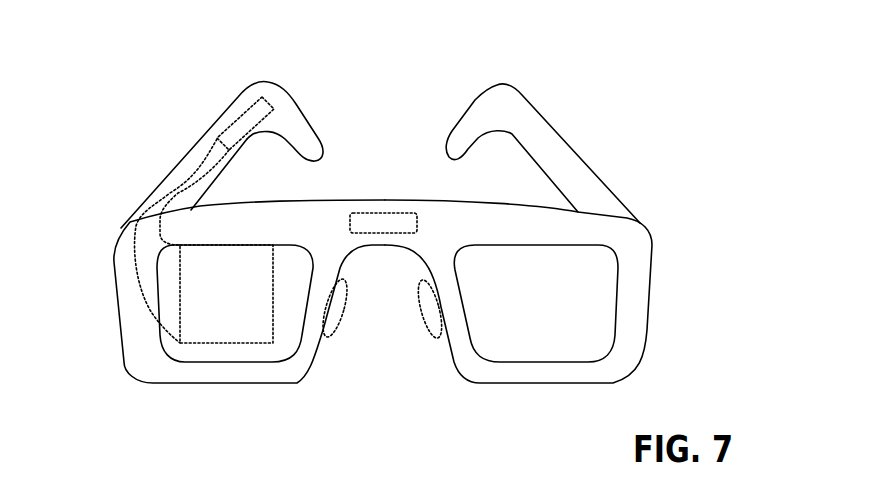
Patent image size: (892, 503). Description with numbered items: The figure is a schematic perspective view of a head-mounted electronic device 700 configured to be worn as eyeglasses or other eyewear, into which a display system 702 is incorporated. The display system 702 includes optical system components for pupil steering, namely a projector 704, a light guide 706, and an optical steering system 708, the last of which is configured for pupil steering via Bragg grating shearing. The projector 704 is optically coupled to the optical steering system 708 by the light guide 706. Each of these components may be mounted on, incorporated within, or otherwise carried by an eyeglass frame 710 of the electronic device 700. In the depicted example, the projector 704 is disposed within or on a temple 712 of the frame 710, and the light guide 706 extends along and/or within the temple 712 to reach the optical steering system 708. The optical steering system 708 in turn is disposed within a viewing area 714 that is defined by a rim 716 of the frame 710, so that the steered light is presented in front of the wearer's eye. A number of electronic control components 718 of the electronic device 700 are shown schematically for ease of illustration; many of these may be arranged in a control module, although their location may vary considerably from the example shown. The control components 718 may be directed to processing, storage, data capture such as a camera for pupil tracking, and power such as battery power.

The head-mounted electronic device 700 is at (554, 46).
The display system 702 is at (178, 118).
The projector 704 is at (243, 113).
The light guide 706 is at (171, 193).
The optical steering system 708 is at (247, 306).
The eyeglass frame 710 is at (653, 242).
The temple 712 is at (225, 167).
The viewing area 714 is at (276, 345).
The rim 716 is at (209, 372).
The electronic control components 718 is at (377, 214).